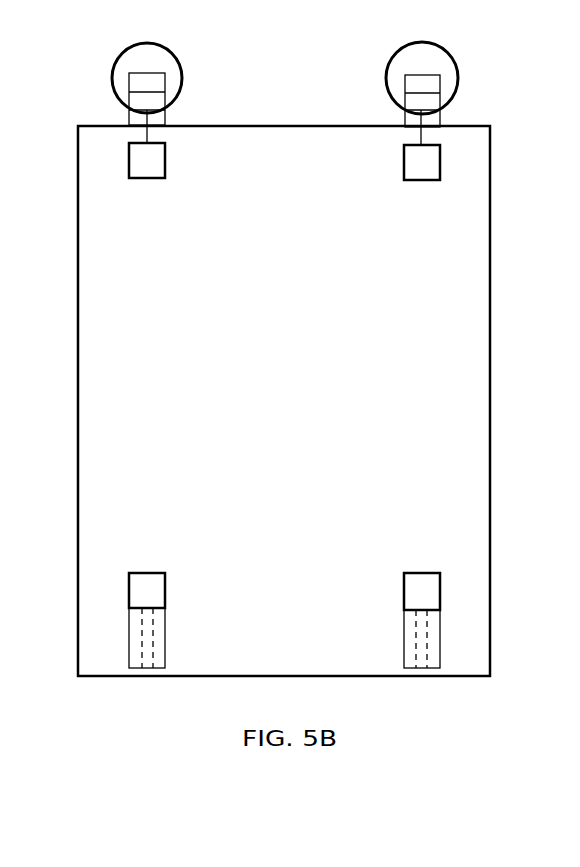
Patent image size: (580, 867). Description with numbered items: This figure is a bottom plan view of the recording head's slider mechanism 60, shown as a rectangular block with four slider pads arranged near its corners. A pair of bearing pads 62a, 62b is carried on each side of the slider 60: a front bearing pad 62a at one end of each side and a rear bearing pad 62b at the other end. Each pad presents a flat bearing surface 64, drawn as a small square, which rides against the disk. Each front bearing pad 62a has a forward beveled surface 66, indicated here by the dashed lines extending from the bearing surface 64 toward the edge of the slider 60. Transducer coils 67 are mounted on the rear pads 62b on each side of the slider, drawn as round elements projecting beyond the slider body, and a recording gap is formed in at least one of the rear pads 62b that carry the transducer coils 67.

The slider mechanism 60 is at (78, 351).
The front bearing pad 62a is at (130, 647).
The rear bearing pad 62b is at (165, 158).
The flat bearing surface 64 is at (143, 180).
The forward beveled surface 66 is at (153, 647).
The transducer coil 67 is at (122, 58).